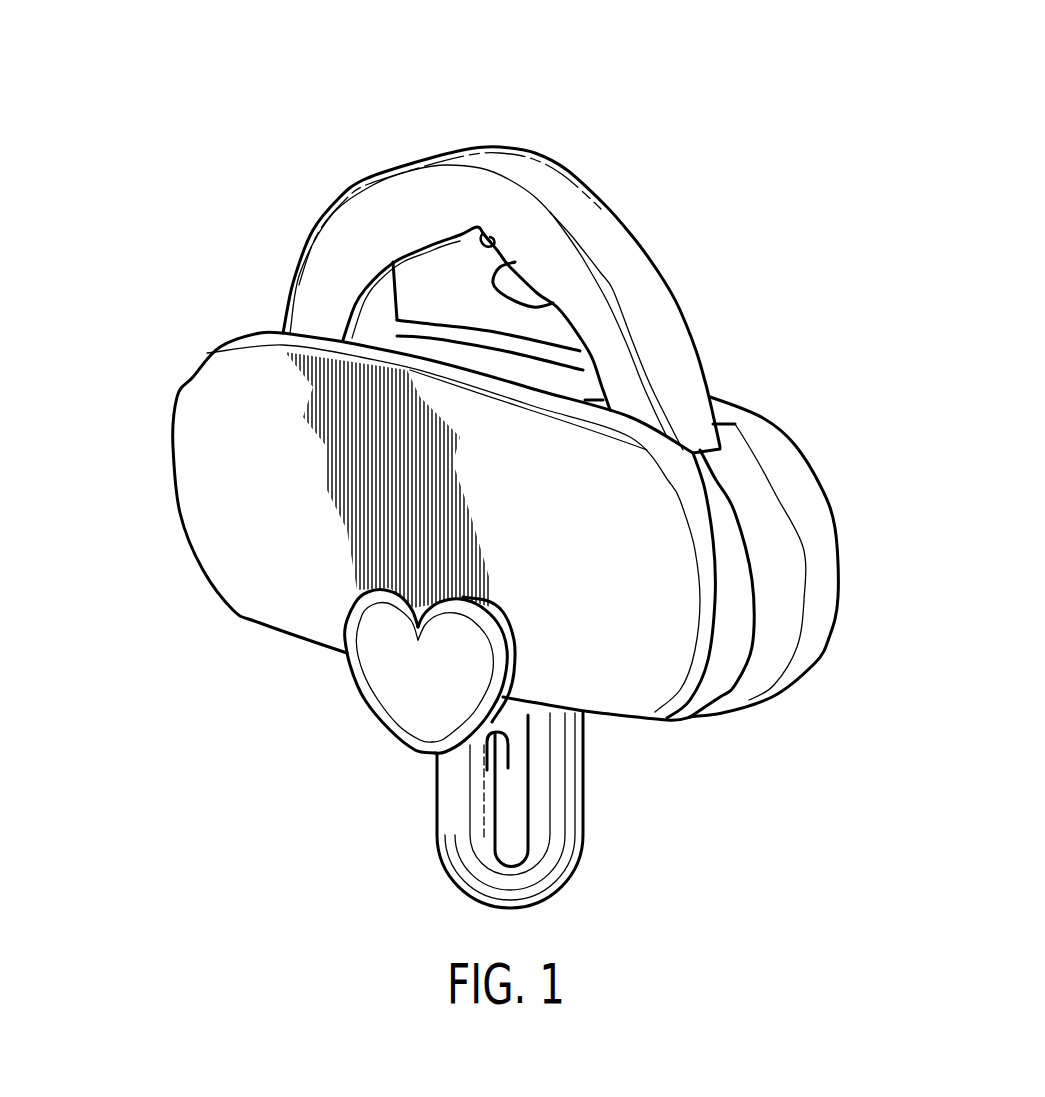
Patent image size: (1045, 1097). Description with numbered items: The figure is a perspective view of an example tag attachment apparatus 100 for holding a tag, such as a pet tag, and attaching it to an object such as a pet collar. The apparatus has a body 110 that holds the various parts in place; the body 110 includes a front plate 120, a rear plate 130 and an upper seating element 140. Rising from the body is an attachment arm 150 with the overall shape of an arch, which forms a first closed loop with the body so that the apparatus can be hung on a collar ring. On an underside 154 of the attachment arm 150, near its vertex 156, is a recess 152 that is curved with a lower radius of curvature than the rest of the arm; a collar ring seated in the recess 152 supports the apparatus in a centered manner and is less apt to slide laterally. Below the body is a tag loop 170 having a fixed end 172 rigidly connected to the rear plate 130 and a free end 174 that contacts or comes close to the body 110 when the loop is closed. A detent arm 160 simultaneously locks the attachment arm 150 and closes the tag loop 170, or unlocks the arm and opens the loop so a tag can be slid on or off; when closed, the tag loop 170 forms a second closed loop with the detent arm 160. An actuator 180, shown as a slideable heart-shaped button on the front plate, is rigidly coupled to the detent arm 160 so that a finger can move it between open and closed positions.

The tag attachment apparatus 100 is at (205, 132).
The body 110 is at (140, 386).
The front plate 120 is at (205, 345).
The rear plate 130 is at (847, 475).
The upper seating element 140 is at (432, 333).
The attachment arm 150 is at (657, 270).
The recess 152 is at (490, 237).
The underside 154 is at (557, 305).
The vertex 156 is at (468, 147).
The detent arm 160 is at (720, 710).
The tag loop 170 is at (450, 870).
The fixed end 172 is at (575, 730).
The free end 174 is at (500, 765).
The actuator 180 is at (395, 692).